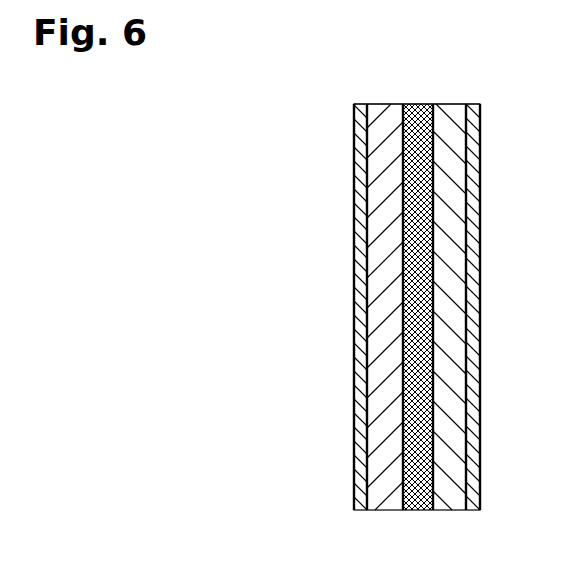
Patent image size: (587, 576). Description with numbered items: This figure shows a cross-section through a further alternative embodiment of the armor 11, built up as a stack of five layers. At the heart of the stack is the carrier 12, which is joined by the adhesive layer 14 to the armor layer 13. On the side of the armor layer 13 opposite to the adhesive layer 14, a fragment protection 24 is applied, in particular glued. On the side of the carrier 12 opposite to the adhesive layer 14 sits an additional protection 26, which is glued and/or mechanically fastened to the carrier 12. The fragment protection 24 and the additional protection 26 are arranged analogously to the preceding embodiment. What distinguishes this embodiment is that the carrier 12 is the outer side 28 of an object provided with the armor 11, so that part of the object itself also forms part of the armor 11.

The armor 11 is at (503, 130).
The carrier 12 is at (379, 511).
The armor layer 13 is at (450, 511).
The adhesive layer 14 is at (421, 511).
The fragment protection 24 is at (482, 458).
The additional protection 26 is at (353, 461).
The outer side 28 is at (386, 102).